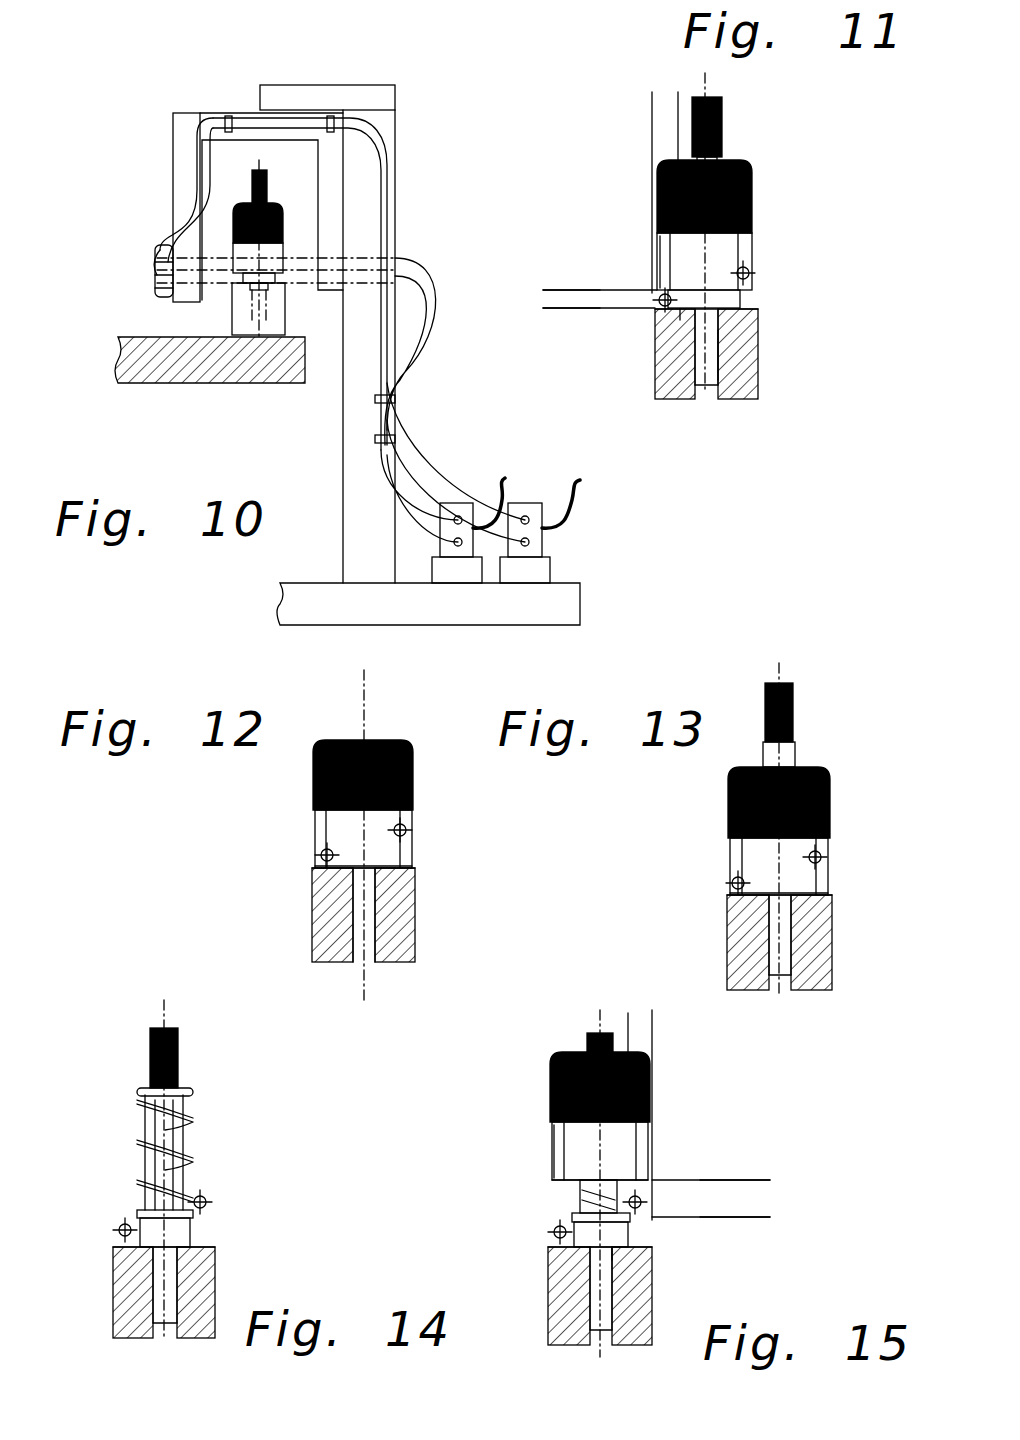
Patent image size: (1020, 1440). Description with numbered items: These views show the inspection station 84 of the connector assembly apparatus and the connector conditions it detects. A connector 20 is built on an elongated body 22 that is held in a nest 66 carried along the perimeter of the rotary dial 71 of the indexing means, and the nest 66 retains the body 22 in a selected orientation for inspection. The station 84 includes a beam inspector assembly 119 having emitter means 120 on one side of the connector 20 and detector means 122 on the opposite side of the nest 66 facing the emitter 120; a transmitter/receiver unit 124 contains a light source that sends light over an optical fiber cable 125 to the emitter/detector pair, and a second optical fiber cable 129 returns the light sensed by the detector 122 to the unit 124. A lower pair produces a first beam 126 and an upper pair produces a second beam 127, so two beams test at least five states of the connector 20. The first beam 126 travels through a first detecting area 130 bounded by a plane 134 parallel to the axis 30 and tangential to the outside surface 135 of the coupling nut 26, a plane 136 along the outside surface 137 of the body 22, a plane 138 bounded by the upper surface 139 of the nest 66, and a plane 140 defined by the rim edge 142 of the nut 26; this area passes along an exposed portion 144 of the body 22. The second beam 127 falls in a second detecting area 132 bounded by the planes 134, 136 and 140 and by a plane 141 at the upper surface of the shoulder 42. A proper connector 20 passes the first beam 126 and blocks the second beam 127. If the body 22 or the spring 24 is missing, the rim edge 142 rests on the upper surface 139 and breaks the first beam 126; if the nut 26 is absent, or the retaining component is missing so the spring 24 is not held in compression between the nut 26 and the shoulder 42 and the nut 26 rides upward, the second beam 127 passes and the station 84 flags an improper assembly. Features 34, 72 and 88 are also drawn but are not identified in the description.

In FIG. 10, the connector 20 is at (295, 222).
In FIG. 11, the connector 20 is at (790, 175).
In FIG. 11, the elongated body 22 is at (728, 105).
In FIG. 13, the elongated body 22 is at (800, 725).
In FIG. 14, the elongated body 22 is at (148, 1033).
In FIG. 15, the elongated body 22 is at (585, 1200).
In FIG. 14, the spring 24 is at (198, 1146).
In FIG. 11, the coupling nut 26 is at (752, 212).
In FIG. 12, the coupling nut 26 is at (313, 797).
In FIG. 13, the coupling nut 26 is at (728, 817).
In FIG. 15, the coupling nut 26 is at (550, 1080).
In FIG. 11, the axis 30 is at (705, 400).
In FIG. 12, the axis 30 is at (364, 715).
In FIG. 13, the axis 30 is at (779, 670).
In FIG. 14, the axis 30 is at (166, 1010).
In FIG. 15, the axis 30 is at (600, 1030).
In FIG. 11, the bore 34 is at (695, 392).
In FIG. 13, the bore 34 is at (769, 965).
In FIG. 14, the bore 34 is at (150, 1268).
In FIG. 15, the bore 34 is at (590, 1340).
In FIG. 14, the shoulder 42 is at (192, 1226).
In FIG. 15, the shoulder 42 is at (630, 1233).
In FIG. 10, the nest 66 is at (287, 305).
In FIG. 11, the nest 66 is at (760, 392).
In FIG. 12, the nest 66 is at (415, 895).
In FIG. 13, the nest 66 is at (832, 920).
In FIG. 14, the nest 66 is at (215, 1260).
In FIG. 15, the nest 66 is at (552, 1278).
In FIG. 10, the rotary dial 71 is at (195, 385).
In FIG. 11, the passage 72 is at (718, 392).
In FIG. 12, the passage 72 is at (372, 963).
In FIG. 13, the passage 72 is at (792, 990).
In FIG. 14, the passage 72 is at (167, 1340).
In FIG. 15, the passage 72 is at (610, 1345).
In FIG. 10, the inspection station 84 is at (218, 73).
In FIG. 10, the lead wire 88 is at (502, 480).
In FIG. 10, the beam inspector assembly 119 is at (500, 455).
In FIG. 10, the emitter means 120 is at (363, 245).
In FIG. 10, the detector means 122 is at (138, 293).
In FIG. 10, the transmitter/receiver unit 124 is at (560, 555).
In FIG. 10, the optical fiber cable 125 is at (414, 355).
In FIG. 10, the first beam 126 is at (228, 292).
In FIG. 11, the first beam 126 is at (655, 310).
In FIG. 12, the first beam 126 is at (325, 850).
In FIG. 13, the first beam 126 is at (735, 878).
In FIG. 14, the first beam 126 is at (122, 1226).
In FIG. 15, the first beam 126 is at (558, 1240).
In FIG. 10, the second beam 127 is at (212, 258).
In FIG. 11, the second beam 127 is at (748, 270).
In FIG. 12, the second beam 127 is at (406, 825).
In FIG. 13, the second beam 127 is at (822, 848).
In FIG. 14, the second beam 127 is at (206, 1199).
In FIG. 15, the second beam 127 is at (642, 1200).
In FIG. 10, the optical fiber cable 129 is at (158, 275).
In FIG. 11, the first detecting area 130 is at (650, 287).
In FIG. 15, the second detecting area 132 is at (658, 1178).
In FIG. 11, the plane 134 is at (652, 95).
In FIG. 15, the plane 134 is at (652, 1018).
In FIG. 11, the outside surface of the nut body 135 is at (656, 235).
In FIG. 15, the outside surface of the nut body 135 is at (560, 1175).
In FIG. 11, the plane 136 is at (678, 80).
In FIG. 15, the plane 136 is at (628, 1020).
In FIG. 11, the outside surface of the elongated body 137 is at (680, 320).
In FIG. 15, the outside surface of the elongated body 137 is at (620, 1250).
In FIG. 11, the plane 138 is at (552, 312).
In FIG. 11, the upper surface of the nest 139 is at (758, 315).
In FIG. 12, the upper surface of the nest 139 is at (412, 868).
In FIG. 13, the upper surface of the nest 139 is at (832, 895).
In FIG. 14, the upper surface of the nest 139 is at (193, 1244).
In FIG. 15, the upper surface of the nest 139 is at (652, 1255).
In FIG. 11, the plane 140 is at (558, 290).
In FIG. 15, the plane 140 is at (762, 1180).
In FIG. 15, the plane 141 is at (762, 1218).
In FIG. 11, the rim edge 142 is at (740, 298).
In FIG. 12, the rim edge 142 is at (315, 893).
In FIG. 13, the rim edge 142 is at (727, 913).
In FIG. 15, the rim edge 142 is at (565, 1185).
In FIG. 11, the exposed portion 144 is at (745, 352).